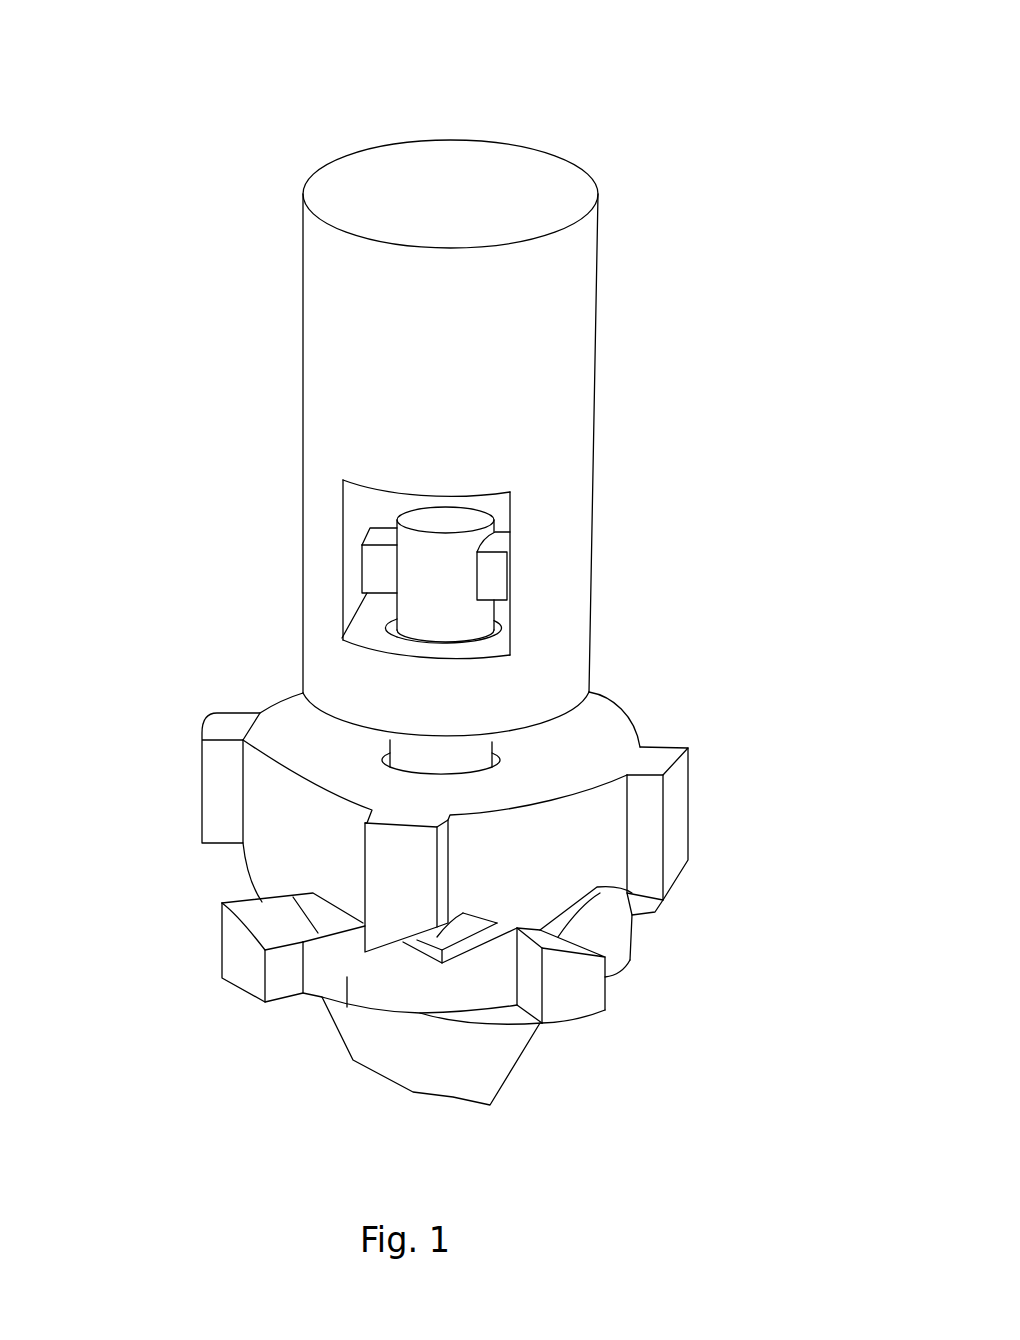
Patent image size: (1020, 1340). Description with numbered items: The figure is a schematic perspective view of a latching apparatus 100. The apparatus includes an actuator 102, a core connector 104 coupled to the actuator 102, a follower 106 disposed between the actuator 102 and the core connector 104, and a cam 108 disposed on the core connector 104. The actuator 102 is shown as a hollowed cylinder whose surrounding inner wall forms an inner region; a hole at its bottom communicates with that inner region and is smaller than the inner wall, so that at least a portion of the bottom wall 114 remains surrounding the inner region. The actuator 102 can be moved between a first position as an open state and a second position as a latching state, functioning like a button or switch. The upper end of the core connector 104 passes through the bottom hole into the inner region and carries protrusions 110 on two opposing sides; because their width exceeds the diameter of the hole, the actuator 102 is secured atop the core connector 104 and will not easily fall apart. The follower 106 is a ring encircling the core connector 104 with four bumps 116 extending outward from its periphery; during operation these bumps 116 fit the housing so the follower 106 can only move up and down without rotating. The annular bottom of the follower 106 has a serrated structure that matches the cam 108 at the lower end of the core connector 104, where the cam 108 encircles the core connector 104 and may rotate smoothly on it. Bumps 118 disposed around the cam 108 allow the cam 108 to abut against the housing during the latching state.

The latching apparatus 100 is at (613, 111).
The actuator 102 is at (572, 318).
The core connector 104 is at (463, 757).
The follower 106 is at (262, 795).
The cam 108 is at (347, 975).
The protrusions 110 is at (497, 570).
The bottom wall 114 is at (367, 627).
The bumps 116 is at (645, 823).
The bumps 118 is at (582, 992).